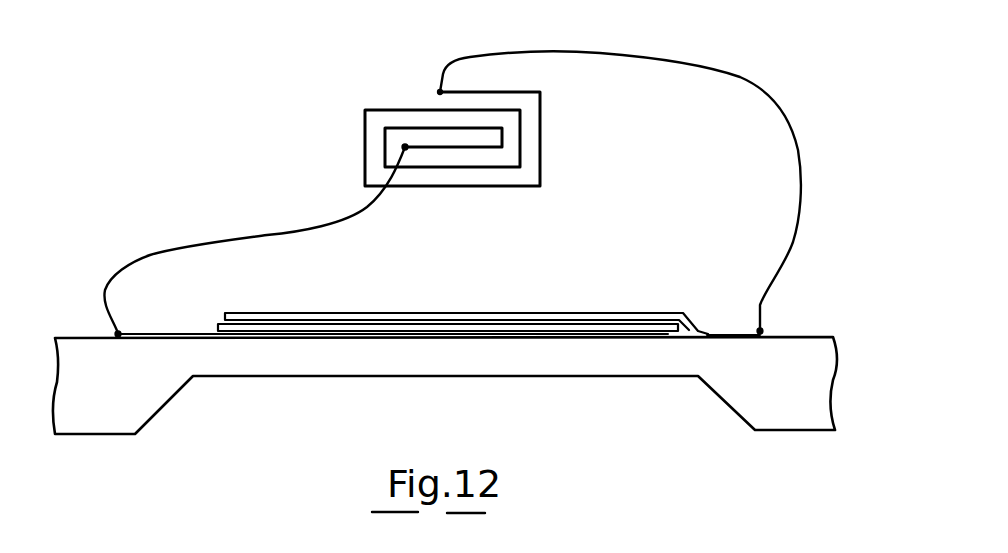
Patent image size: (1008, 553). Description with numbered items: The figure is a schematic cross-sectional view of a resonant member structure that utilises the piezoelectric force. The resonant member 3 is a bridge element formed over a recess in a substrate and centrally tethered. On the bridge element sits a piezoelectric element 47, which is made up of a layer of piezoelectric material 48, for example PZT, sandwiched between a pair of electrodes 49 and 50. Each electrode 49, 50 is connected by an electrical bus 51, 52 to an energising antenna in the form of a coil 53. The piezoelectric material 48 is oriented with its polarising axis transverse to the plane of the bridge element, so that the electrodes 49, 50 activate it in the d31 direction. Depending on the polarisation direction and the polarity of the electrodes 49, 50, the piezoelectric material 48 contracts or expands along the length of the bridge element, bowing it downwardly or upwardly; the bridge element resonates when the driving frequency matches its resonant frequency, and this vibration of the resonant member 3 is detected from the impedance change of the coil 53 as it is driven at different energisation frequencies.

The resonant member 3 is at (373, 365).
The piezoelectric element 47 is at (341, 297).
The piezoelectric material 48 is at (637, 323).
The electrode 49 is at (503, 313).
The electrode 50 is at (562, 338).
The electrical bus 51 is at (793, 242).
The electrical bus 52 is at (192, 243).
The coil 53 is at (542, 143).